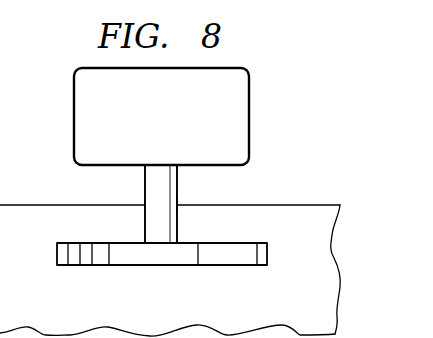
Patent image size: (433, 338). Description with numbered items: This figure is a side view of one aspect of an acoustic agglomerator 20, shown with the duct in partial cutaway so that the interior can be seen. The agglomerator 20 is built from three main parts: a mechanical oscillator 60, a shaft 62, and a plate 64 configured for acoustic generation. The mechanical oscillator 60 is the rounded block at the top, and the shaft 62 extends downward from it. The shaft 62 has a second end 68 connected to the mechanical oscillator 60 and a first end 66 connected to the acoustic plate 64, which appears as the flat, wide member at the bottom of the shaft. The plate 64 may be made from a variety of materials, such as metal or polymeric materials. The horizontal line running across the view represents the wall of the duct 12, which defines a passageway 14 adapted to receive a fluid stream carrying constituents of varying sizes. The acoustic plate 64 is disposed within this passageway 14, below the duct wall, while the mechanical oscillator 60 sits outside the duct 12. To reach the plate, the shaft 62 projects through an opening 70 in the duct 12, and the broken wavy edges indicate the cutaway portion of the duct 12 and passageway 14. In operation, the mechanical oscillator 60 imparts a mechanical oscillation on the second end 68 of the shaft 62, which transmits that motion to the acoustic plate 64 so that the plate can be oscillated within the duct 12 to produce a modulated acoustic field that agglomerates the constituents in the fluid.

The duct 12 is at (302, 205).
The passageway 14 is at (330, 247).
The agglomerator 20 is at (299, 100).
The mechanical oscillator 60 is at (74, 115).
The shaft 62 is at (178, 190).
The plate 64 is at (162, 266).
The first end 66 is at (145, 228).
The second end 68 is at (145, 188).
The opening 70 is at (182, 201).